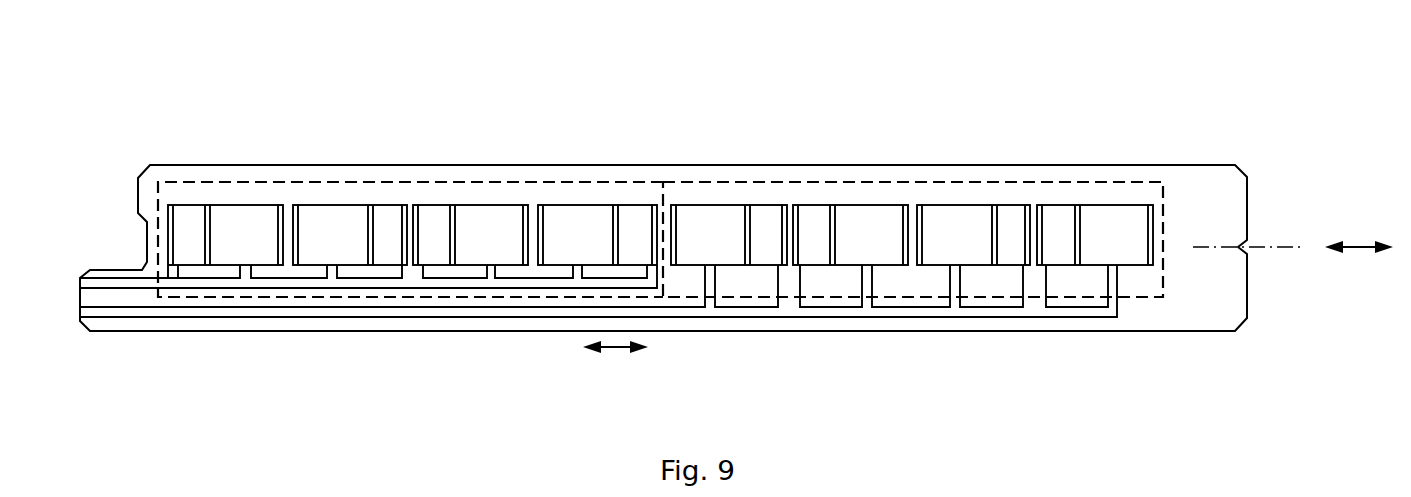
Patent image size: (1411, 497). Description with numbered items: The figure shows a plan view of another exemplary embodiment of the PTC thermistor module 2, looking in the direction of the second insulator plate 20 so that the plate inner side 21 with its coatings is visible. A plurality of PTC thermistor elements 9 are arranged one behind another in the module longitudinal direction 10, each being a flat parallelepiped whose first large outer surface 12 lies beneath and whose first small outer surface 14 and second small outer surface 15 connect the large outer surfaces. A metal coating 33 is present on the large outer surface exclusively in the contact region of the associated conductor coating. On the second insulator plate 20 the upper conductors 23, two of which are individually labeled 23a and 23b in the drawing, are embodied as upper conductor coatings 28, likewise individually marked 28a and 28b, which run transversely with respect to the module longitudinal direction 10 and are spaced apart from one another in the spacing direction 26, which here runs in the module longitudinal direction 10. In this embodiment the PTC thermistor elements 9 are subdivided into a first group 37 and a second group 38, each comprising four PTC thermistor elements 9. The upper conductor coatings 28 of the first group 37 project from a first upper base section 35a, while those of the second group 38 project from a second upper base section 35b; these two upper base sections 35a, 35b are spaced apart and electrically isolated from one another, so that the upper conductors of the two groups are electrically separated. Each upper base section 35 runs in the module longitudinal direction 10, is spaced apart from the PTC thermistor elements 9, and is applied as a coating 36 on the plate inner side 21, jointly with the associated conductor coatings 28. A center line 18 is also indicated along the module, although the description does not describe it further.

The PTC thermistor module 2 is at (1281, 132).
The PTC thermistor element 9 is at (340, 190).
The module longitudinal direction 10 is at (1356, 247).
The first large outer surface 12 is at (633, 212).
The first small outer surface 14 is at (220, 268).
The second small outer surface 15 is at (252, 203).
The central axis 18 is at (1290, 242).
The second insulator plate 20 is at (693, 150).
The plate inner side 21 is at (758, 177).
The upper conductor 23 is at (402, 347).
The first contact element 23a is at (237, 347).
The second contact element 23b is at (312, 330).
The spacing direction 26 is at (617, 347).
The upper conductor coating 28 is at (402, 347).
The first spring element 28a is at (178, 272).
The second spring element 28b is at (252, 272).
The metal coating 33 is at (207, 205).
The upper base section 35 is at (598, 347).
The first upper base section 35a is at (457, 288).
The second upper base section 35b is at (903, 312).
The coating 36 is at (598, 347).
The first group 37 is at (405, 182).
The second group 38 is at (908, 182).